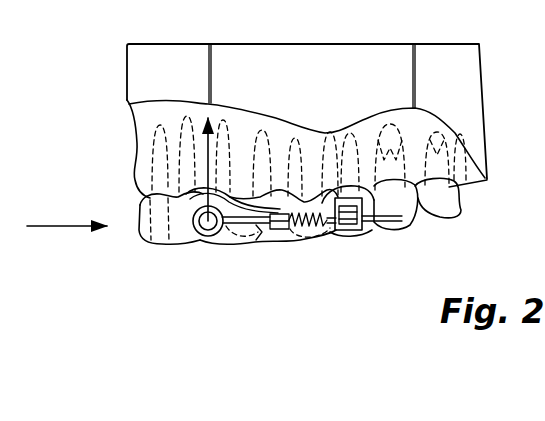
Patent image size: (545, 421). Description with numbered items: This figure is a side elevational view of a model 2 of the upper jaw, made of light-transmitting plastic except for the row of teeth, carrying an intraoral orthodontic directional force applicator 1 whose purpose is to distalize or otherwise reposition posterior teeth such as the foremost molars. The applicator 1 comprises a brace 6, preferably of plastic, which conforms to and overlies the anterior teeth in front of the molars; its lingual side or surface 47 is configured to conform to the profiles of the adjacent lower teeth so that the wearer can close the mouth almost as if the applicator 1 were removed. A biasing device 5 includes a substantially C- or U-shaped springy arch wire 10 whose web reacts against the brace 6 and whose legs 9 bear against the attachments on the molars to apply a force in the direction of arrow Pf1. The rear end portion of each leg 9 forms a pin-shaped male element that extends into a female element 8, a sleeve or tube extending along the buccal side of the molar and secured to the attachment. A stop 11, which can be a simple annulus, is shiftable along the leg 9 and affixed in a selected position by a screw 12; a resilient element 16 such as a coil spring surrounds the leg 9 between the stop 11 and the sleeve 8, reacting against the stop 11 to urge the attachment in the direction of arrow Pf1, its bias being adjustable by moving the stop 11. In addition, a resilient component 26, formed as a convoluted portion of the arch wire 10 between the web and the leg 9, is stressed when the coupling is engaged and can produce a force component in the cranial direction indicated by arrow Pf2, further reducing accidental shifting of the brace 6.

The intraoral orthodontic directional force applicator 1 is at (269, 105).
The model 2 is at (459, 87).
The biasing device 5 is at (210, 252).
The brace 6 is at (157, 240).
The female element 8 is at (354, 229).
The leg 9 is at (387, 224).
The arch wire 10 is at (343, 250).
The stop 11 is at (248, 237).
The screw 12 is at (283, 233).
The resilient element 16 is at (309, 239).
The resilient component 26 is at (200, 238).
The lingual side or surface 47 is at (172, 243).
The arrow Pf1 is at (56, 226).
The arrow Pf2 is at (207, 168).